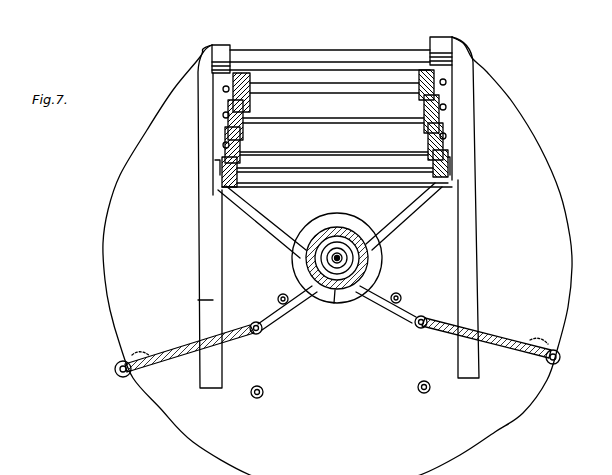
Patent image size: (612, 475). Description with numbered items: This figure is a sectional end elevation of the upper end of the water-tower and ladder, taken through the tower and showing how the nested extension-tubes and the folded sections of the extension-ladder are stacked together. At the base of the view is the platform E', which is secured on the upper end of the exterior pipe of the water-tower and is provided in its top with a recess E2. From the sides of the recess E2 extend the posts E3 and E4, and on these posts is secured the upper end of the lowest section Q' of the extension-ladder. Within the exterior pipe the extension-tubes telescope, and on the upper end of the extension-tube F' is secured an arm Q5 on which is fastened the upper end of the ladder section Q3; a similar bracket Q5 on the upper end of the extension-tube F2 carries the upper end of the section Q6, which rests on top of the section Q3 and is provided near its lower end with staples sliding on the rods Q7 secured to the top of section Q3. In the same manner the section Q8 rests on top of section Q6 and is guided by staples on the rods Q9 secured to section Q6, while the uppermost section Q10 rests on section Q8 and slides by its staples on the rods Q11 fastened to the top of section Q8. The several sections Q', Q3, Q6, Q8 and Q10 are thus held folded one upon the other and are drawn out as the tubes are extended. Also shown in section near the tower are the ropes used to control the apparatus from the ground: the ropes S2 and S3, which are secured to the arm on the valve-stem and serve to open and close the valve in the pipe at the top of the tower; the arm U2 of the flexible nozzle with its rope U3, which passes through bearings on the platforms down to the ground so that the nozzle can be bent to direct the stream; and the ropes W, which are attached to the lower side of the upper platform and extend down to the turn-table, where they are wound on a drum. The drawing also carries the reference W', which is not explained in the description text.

The platform E' is at (347, 256).
The recess E2 is at (395, 170).
The post E3 is at (481, 290).
The post E4 is at (205, 265).
The extension-tube F' is at (340, 251).
The extension-tube F2 is at (333, 300).
The section of the extension-ladder Q' is at (332, 40).
The section of the extension-ladder Q3 is at (217, 179).
The arm Q5 is at (330, 220).
The section of the extension-ladder Q6 is at (428, 146).
The rod Q7 is at (222, 145).
The section of the extension-ladder Q8 is at (424, 116).
The rod Q9 is at (222, 115).
The section of the extension-ladder Q10 is at (223, 88).
The rod Q11 is at (447, 82).
The rope S2 is at (262, 331).
The rope S3 is at (414, 326).
The arm U2 is at (421, 393).
The rope U3 is at (257, 398).
The rope W is at (267, 298).
The pin W' is at (405, 289).